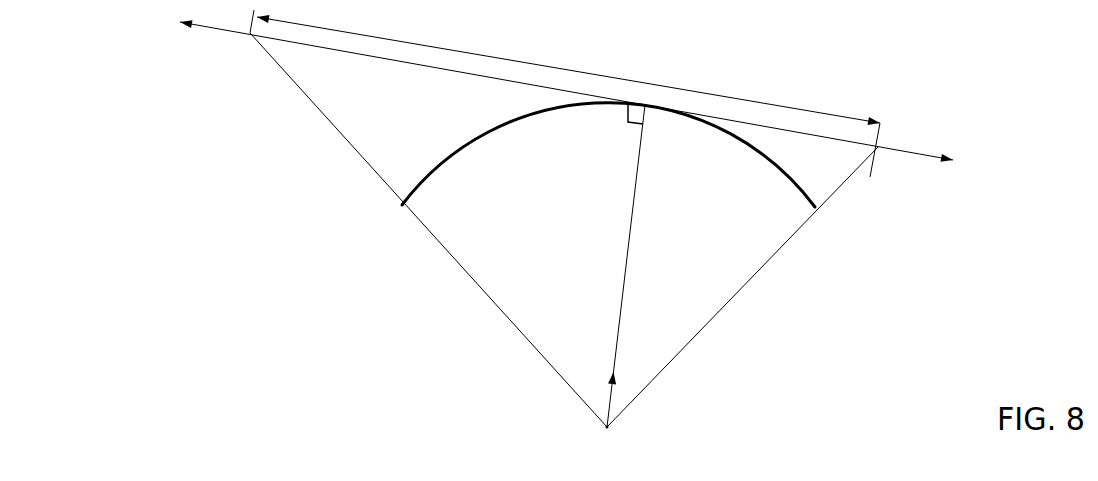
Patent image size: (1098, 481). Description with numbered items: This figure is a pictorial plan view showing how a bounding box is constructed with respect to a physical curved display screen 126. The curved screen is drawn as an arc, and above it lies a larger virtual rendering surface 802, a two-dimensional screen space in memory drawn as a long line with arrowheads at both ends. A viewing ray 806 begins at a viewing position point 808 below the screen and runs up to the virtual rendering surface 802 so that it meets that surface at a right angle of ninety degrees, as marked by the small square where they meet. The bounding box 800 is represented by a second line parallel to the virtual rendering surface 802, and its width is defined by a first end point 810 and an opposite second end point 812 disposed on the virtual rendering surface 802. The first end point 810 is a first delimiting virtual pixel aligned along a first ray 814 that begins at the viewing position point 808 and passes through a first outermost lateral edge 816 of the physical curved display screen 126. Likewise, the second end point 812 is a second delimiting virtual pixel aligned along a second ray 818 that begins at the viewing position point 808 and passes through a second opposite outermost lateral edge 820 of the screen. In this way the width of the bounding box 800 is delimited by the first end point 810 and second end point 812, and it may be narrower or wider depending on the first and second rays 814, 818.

The physical curved display screen 126 is at (790, 180).
The bounding box 800 is at (850, 122).
The virtual rendering surface 802 is at (913, 152).
The viewing ray 806 is at (630, 228).
The viewing position point 808 is at (607, 427).
The first end point 810 is at (250, 35).
The second end point 812 is at (880, 150).
The first ray 814 is at (523, 335).
The first outermost lateral edge 816 is at (402, 207).
The second ray 818 is at (697, 332).
The second opposite outermost lateral edge 820 is at (815, 208).